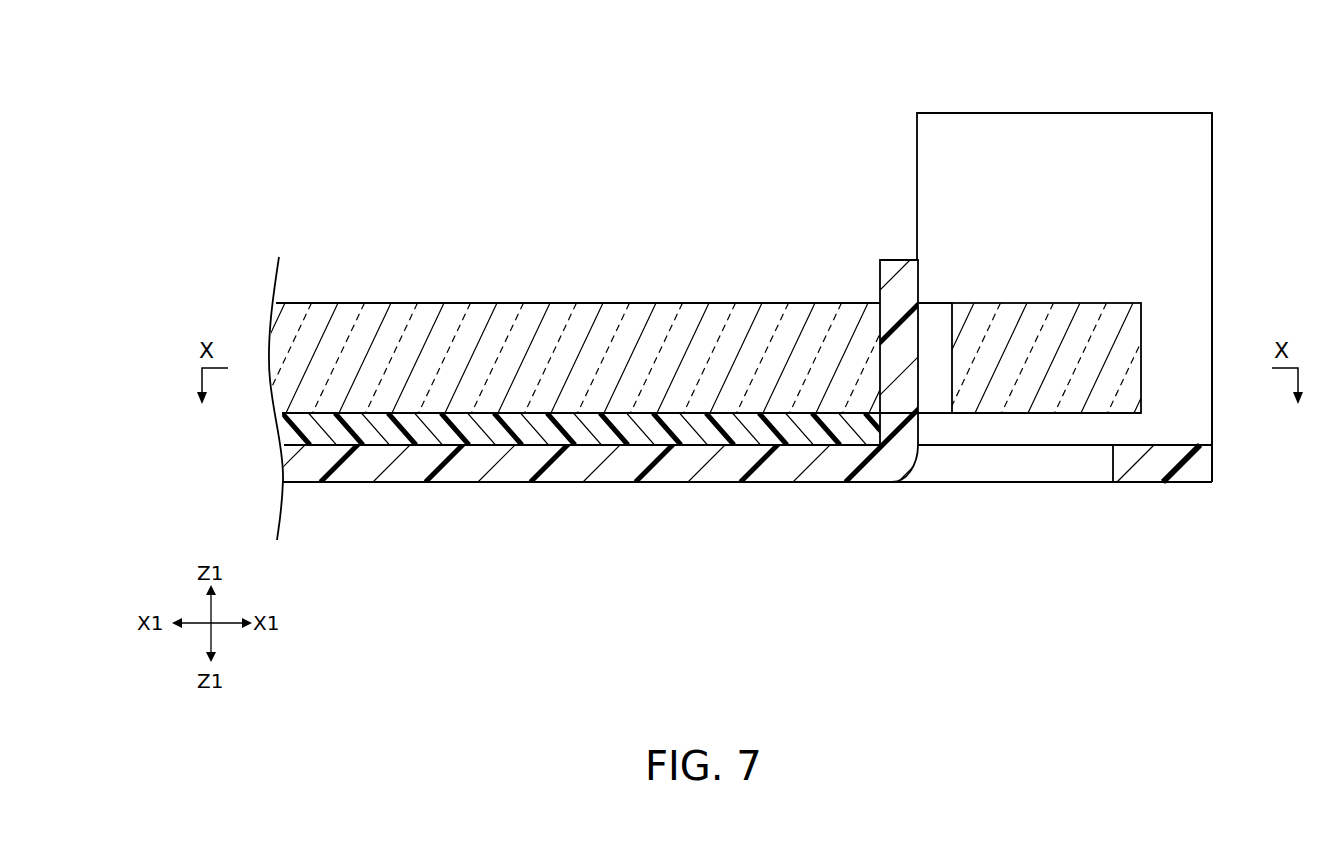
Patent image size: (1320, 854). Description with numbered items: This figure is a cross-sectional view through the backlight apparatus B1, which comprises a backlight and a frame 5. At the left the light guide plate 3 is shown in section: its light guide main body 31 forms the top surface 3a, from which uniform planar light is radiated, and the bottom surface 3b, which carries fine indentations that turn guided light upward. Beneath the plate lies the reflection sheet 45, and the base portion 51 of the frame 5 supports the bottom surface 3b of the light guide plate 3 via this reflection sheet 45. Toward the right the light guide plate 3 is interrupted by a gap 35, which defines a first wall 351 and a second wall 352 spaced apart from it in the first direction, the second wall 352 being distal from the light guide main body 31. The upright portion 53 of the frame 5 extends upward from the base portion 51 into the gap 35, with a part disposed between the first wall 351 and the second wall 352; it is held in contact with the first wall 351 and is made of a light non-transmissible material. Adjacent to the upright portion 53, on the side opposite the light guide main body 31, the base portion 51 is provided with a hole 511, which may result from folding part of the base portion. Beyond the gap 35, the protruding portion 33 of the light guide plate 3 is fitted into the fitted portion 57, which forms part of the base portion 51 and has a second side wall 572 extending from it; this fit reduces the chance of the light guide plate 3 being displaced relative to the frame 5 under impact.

The backlight apparatus B1 is at (272, 110).
The light guide plate 3 is at (687, 363).
The light guide main body 31 is at (561, 340).
The top surface 3a is at (633, 303).
The bottom surface 3b is at (626, 447).
The reflection sheet 45 is at (516, 432).
The frame 5 is at (802, 467).
The base portion 51 is at (737, 465).
The upright portion 53 is at (896, 395).
The hole 511 is at (1031, 465).
The fitted portion 57 is at (988, 158).
The second side wall 572 is at (1043, 170).
The gap 35 is at (940, 320).
The first wall 351 is at (890, 323).
The second wall 352 is at (947, 383).
The protruding portion 33 is at (1028, 320).